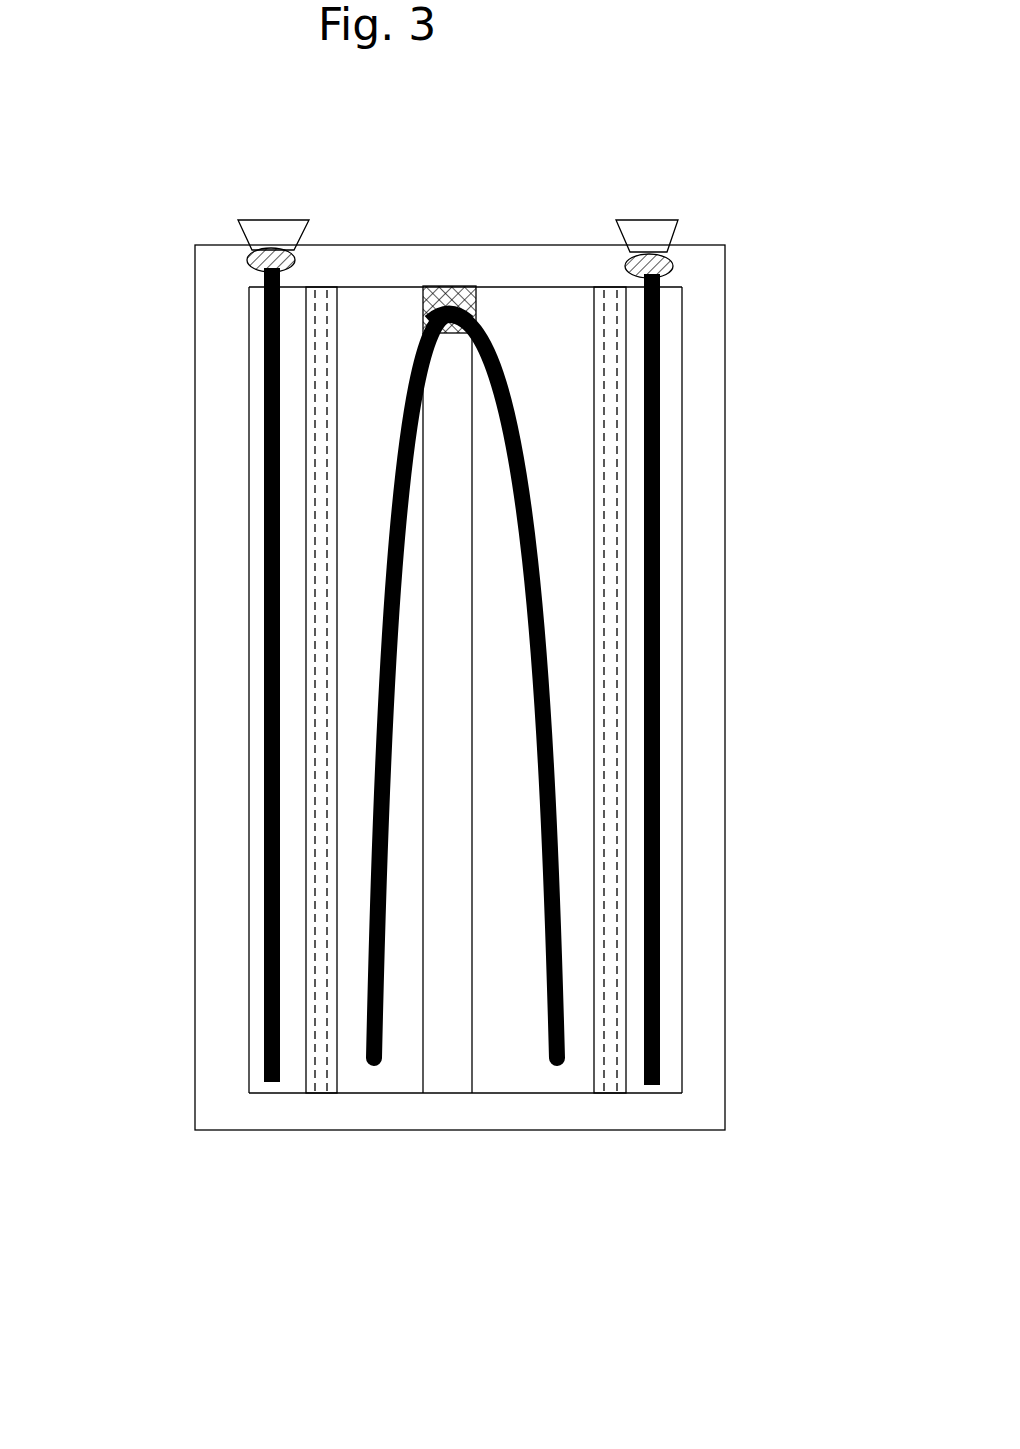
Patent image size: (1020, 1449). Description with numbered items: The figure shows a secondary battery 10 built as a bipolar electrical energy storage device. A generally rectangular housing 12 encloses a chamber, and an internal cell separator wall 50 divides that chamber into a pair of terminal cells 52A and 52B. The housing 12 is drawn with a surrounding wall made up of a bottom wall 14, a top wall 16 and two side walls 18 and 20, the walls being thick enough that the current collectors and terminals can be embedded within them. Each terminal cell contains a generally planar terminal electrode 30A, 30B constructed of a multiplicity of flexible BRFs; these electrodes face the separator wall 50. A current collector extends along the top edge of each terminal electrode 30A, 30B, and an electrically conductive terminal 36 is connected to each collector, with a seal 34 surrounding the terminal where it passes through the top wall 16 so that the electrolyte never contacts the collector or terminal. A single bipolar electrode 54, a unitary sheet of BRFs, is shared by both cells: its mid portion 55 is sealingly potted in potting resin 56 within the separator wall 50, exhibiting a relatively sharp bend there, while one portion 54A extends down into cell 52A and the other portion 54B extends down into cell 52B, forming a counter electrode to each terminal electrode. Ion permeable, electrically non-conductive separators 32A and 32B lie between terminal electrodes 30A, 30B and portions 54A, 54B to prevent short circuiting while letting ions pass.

The secondary battery 10 is at (576, 116).
The housing 12 is at (738, 263).
The bottom wall 14 is at (290, 1113).
The top wall 16 is at (548, 262).
The left side wall 18 is at (213, 487).
The right side wall 20 is at (700, 880).
The terminal electrode 30A is at (265, 540).
The terminal electrode 30B is at (660, 548).
The separator 32A is at (320, 730).
The separator 32B is at (620, 725).
The seal 34 is at (247, 262).
The terminal 36 is at (282, 232).
The separator wall 50 is at (440, 1068).
The terminal cell 52A is at (290, 1071).
The terminal cell 52B is at (638, 1075).
The bipolar electrode 54 is at (558, 706).
The portion of bipolar electrode 54A is at (367, 1065).
The portion of bipolar electrode 54B is at (563, 1062).
The mid portion 55 is at (423, 316).
The potting resin 56 is at (465, 285).